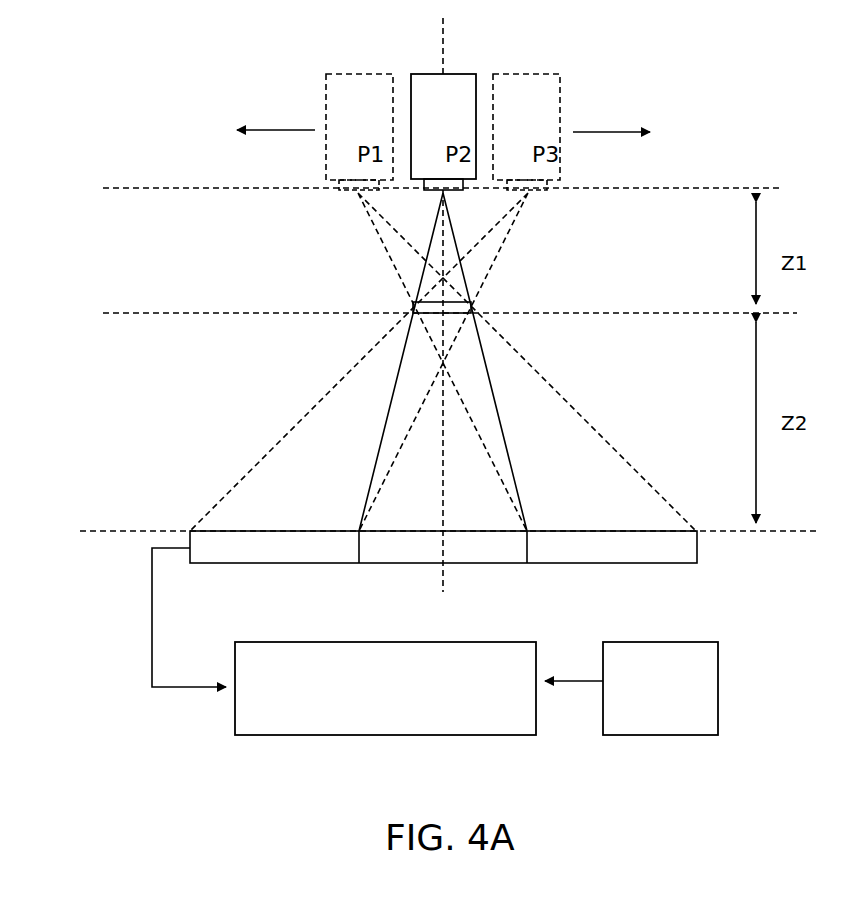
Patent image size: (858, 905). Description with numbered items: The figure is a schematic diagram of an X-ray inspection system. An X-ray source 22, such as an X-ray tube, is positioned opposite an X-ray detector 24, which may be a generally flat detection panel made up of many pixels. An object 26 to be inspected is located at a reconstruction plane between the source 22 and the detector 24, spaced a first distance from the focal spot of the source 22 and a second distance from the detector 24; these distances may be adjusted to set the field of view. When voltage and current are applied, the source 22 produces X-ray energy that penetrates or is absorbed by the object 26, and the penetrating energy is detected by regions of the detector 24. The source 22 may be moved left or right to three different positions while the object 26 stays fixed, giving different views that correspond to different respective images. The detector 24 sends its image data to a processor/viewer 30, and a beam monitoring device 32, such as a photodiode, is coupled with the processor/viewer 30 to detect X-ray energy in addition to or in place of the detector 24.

The X-ray source 22 is at (457, 110).
The X-ray detector 24 is at (657, 564).
The object 26 is at (472, 305).
The processor/viewer 30 is at (401, 701).
The beam monitoring device 32 is at (674, 701).